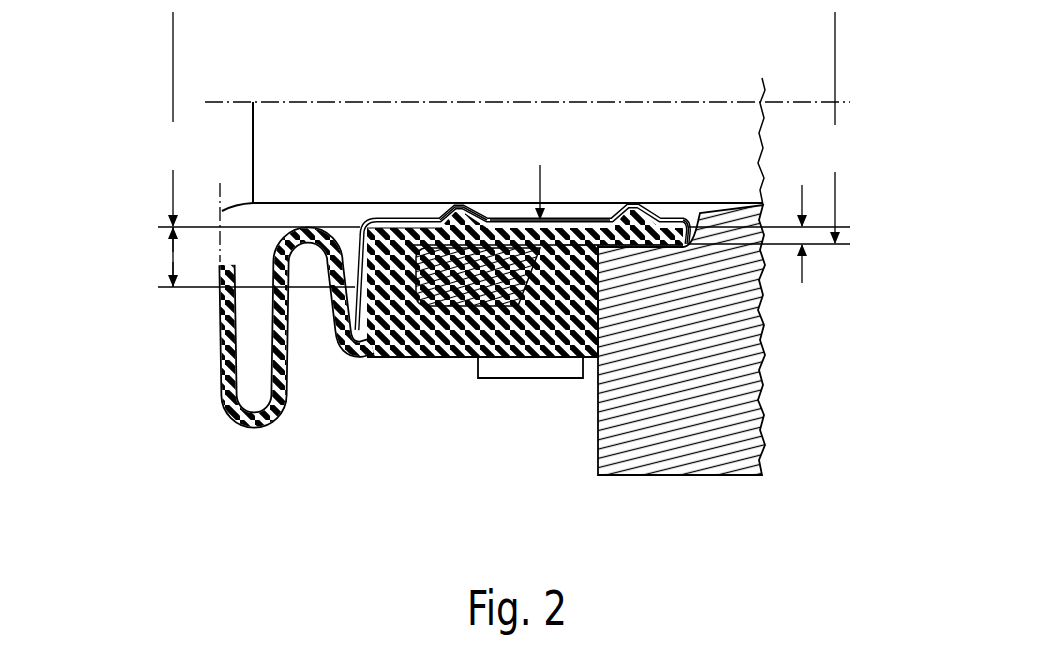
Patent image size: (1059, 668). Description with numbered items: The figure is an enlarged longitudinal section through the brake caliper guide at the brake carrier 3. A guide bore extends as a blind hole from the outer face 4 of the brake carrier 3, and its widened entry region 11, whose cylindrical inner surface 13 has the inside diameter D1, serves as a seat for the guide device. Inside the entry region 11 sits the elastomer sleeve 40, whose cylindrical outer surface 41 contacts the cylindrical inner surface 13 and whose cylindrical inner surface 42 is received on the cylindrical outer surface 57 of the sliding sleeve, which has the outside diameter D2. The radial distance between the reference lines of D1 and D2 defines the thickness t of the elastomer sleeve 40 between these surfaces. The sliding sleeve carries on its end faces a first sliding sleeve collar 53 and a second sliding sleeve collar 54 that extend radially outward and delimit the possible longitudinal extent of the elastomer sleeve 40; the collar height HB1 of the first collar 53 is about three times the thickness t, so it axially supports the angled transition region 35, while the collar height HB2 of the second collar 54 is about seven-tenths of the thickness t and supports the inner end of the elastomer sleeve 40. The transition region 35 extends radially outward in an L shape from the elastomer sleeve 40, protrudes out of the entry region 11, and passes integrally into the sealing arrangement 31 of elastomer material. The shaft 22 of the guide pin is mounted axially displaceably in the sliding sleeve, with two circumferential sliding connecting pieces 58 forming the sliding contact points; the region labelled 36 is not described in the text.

The brake carrier 3 is at (752, 420).
The outer face 4 is at (136, 282).
The entry region 11 is at (512, 272).
The cylindrical inner surface 13 is at (561, 225).
The shaft 22 is at (679, 150).
The sealing arrangement 31 is at (226, 447).
The transition region 35 is at (390, 272).
The gap 36 is at (872, 250).
The elastomer sleeve 40 is at (580, 247).
The cylindrical outer surface 41 is at (641, 248).
The cylindrical inner surface 42 is at (455, 205).
The first sliding sleeve collar 53 is at (357, 358).
The second sliding sleeve collar 54 is at (687, 238).
The cylindrical outer surface 57 is at (428, 229).
The sliding connecting pieces 58 is at (470, 210).
The inside diameter D1 is at (836, 127).
The outside diameter D2 is at (172, 119).
The collar height HB1 is at (170, 258).
The collar height HB2 is at (806, 234).
The thickness t is at (540, 203).